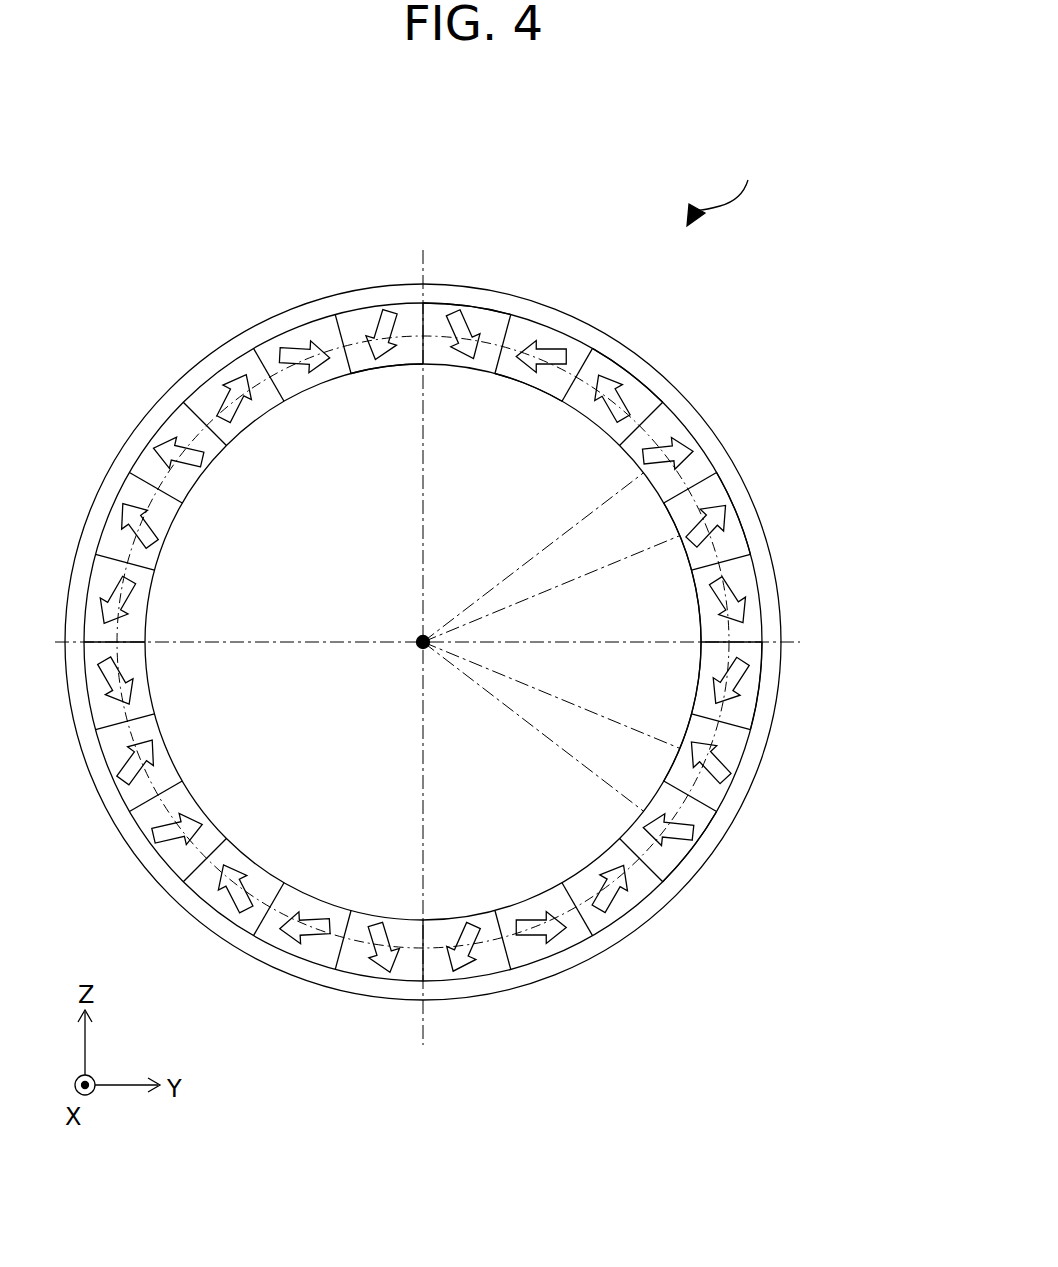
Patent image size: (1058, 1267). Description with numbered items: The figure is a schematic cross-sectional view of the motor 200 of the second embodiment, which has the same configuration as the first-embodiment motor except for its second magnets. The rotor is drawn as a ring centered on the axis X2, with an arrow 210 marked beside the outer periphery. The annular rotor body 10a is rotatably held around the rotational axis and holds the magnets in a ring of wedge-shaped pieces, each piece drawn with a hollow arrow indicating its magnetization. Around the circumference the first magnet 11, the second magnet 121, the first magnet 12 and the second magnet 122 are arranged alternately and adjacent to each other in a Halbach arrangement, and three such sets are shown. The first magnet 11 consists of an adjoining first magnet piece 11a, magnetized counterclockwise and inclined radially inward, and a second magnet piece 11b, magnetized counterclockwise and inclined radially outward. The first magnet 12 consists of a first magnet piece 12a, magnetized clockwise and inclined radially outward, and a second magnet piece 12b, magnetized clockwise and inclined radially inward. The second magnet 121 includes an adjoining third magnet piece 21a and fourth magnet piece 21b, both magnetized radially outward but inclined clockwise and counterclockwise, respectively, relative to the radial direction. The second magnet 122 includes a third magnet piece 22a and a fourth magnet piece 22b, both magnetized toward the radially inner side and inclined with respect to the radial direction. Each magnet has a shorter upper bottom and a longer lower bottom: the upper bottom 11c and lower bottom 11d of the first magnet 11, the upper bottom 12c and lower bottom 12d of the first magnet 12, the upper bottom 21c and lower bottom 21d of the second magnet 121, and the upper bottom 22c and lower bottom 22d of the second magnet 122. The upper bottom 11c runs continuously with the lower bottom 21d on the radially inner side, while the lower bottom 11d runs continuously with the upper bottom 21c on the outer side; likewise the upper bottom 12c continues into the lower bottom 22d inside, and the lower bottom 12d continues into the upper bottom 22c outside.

The motor 200 is at (805, 132).
The rotation direction 210 is at (728, 189).
The rotor body 10a is at (763, 760).
The first magnet 11 is at (580, 289).
The first magnet piece 11a is at (578, 347).
The second magnet piece 11b is at (606, 364).
The upper bottom 11c is at (557, 402).
The lower bottom 11d is at (645, 388).
The first magnet 12 is at (793, 575).
The first magnet piece 12a is at (757, 630).
The second magnet piece 12b is at (755, 662).
The upper bottom 12c is at (700, 637).
The lower bottom 12d is at (758, 693).
The second magnet 121 is at (718, 408).
The third magnet piece 21a is at (693, 438).
The fourth magnet piece 21b is at (714, 495).
The upper bottom 21c is at (738, 508).
The lower bottom 21d is at (668, 518).
The second magnet 122 is at (363, 219).
The third magnet piece 22a is at (408, 307).
The fourth magnet piece 22b is at (439, 307).
The upper bottom 22c is at (477, 307).
The lower bottom 22d is at (400, 365).
The central axis X2 is at (401, 659).